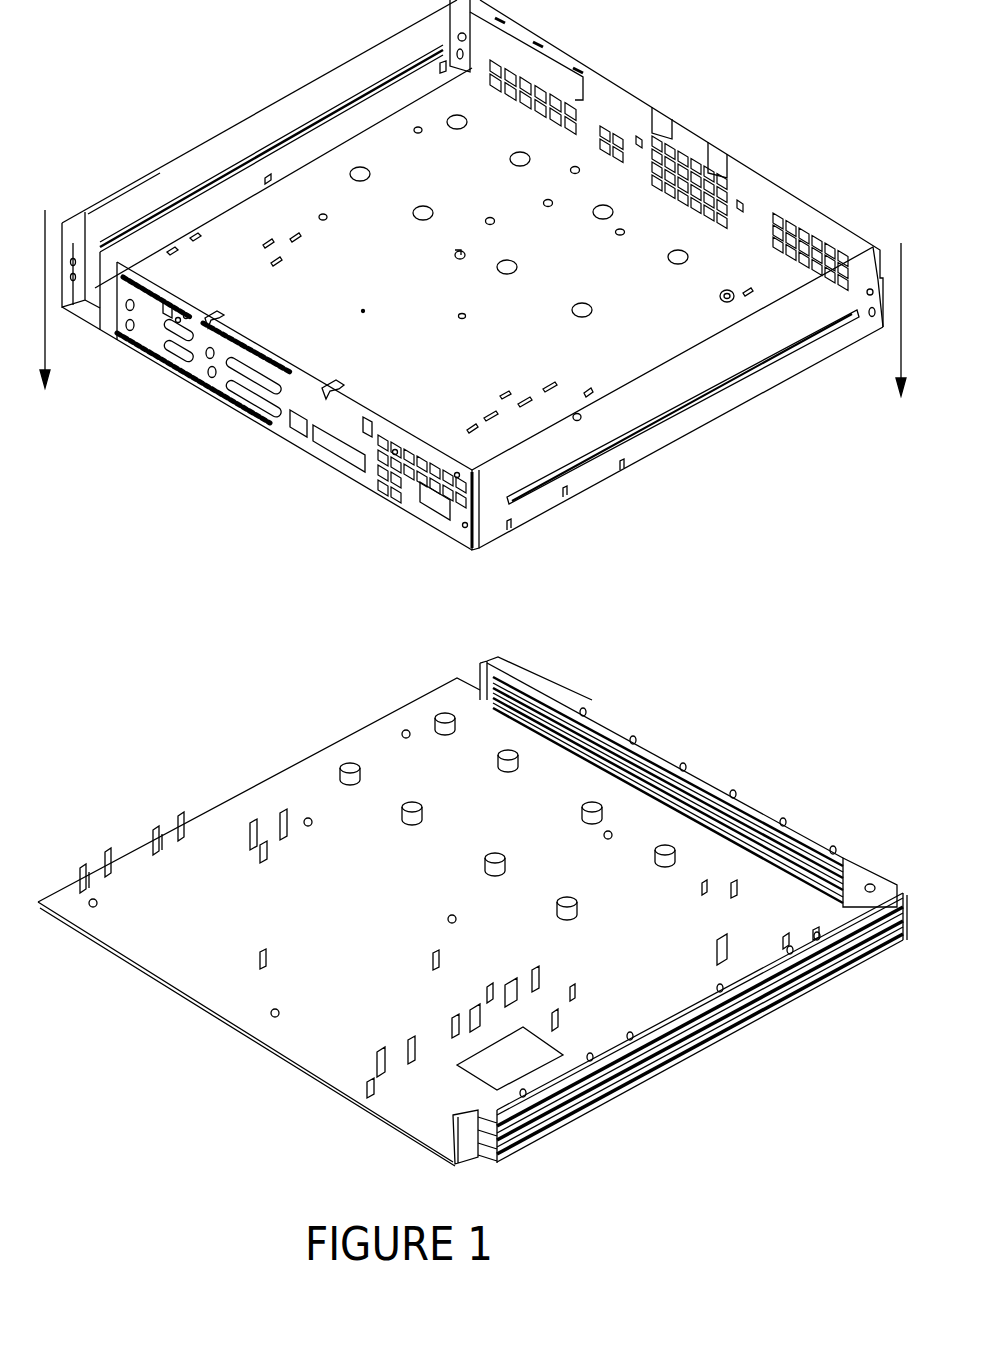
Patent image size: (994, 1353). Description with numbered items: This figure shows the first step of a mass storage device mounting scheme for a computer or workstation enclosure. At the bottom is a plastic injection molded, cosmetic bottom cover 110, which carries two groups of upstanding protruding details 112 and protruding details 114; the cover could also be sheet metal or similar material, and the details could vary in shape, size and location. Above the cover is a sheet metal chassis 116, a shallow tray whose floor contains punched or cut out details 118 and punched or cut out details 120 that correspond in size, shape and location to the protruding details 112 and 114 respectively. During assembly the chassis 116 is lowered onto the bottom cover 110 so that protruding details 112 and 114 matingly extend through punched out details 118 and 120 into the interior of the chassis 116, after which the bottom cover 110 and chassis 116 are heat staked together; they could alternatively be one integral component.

The bottom cover 110 is at (283, 793).
The protruding details 112 is at (500, 768).
The protruding details 114 is at (655, 863).
The sheet metal chassis 116 is at (318, 362).
The punched out details 118 is at (510, 158).
The punched out details 120 is at (578, 303).